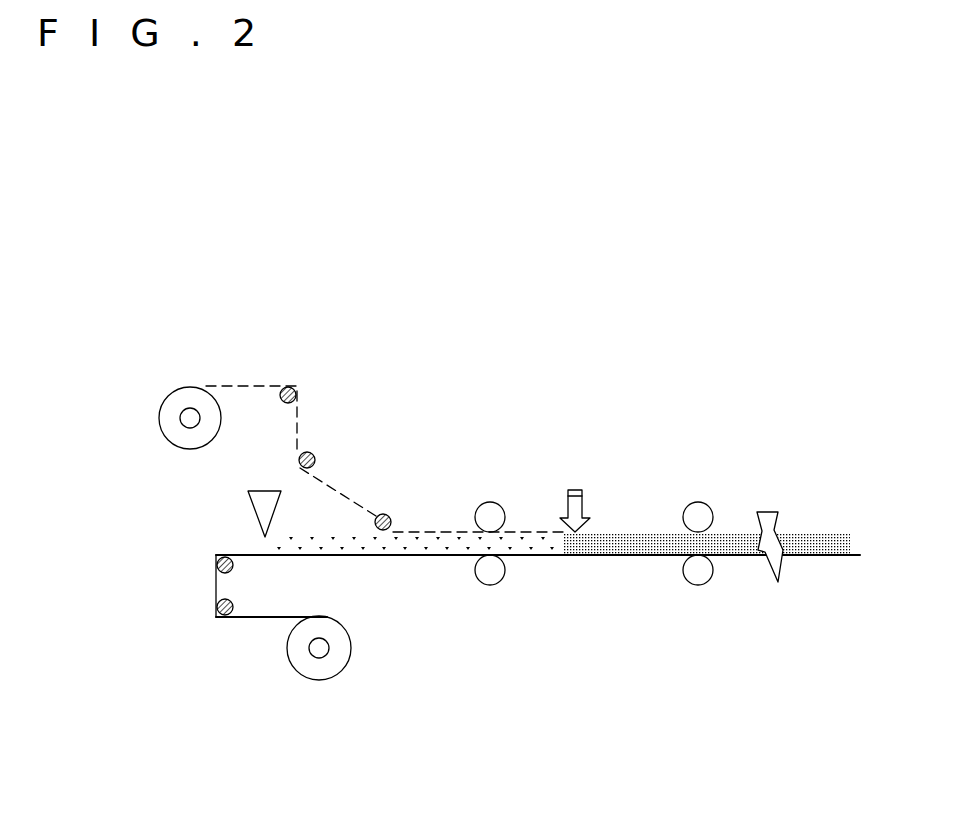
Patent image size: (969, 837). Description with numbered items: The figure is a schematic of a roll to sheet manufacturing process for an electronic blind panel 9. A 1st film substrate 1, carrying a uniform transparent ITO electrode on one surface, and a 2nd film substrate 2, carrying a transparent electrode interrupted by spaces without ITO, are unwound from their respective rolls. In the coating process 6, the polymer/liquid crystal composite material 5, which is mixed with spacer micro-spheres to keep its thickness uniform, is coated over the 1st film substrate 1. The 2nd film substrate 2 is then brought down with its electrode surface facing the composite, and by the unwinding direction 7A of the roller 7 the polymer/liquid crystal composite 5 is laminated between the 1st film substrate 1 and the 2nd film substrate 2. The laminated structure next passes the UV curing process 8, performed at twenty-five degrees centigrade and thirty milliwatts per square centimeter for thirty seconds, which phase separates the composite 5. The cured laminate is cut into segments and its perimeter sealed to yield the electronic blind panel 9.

The 1st film substrate 1 is at (266, 619).
The 2nd film substrate 2 is at (245, 386).
The polymer/liquid crystal composite material 5 is at (312, 538).
The coating process 6 is at (252, 494).
The roller 7 is at (494, 512).
The unwinding direction 7A is at (467, 518).
The UV curing process 8 is at (575, 489).
The electronic blind panel 9 is at (808, 540).